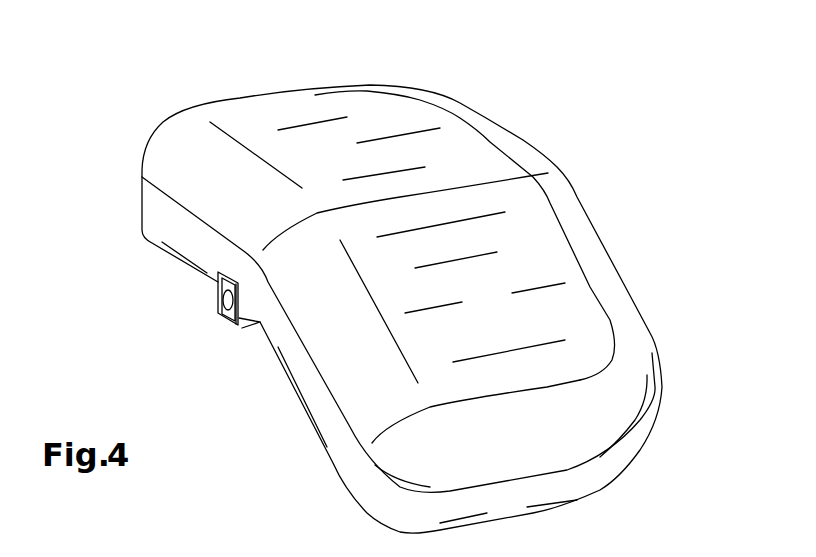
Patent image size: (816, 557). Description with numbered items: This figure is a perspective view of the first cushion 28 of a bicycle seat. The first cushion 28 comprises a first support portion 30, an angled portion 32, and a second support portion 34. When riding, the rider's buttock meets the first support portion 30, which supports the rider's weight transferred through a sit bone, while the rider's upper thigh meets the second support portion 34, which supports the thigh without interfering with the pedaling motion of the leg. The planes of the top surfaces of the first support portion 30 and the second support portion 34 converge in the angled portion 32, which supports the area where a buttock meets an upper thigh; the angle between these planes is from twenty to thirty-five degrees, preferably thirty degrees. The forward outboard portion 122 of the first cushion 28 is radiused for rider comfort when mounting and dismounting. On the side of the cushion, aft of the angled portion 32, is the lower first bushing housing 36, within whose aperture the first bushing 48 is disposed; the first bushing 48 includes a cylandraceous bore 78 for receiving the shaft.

The first cushion 28 is at (658, 150).
The first support portion 30 is at (290, 118).
The angled portion 32 is at (480, 175).
The second support portion 34 is at (568, 302).
The lower first bushing housing 36 is at (218, 308).
The first bushing 48 is at (230, 318).
The cylandraceous bore 78 is at (222, 300).
The forward outboard portion 122 is at (635, 455).